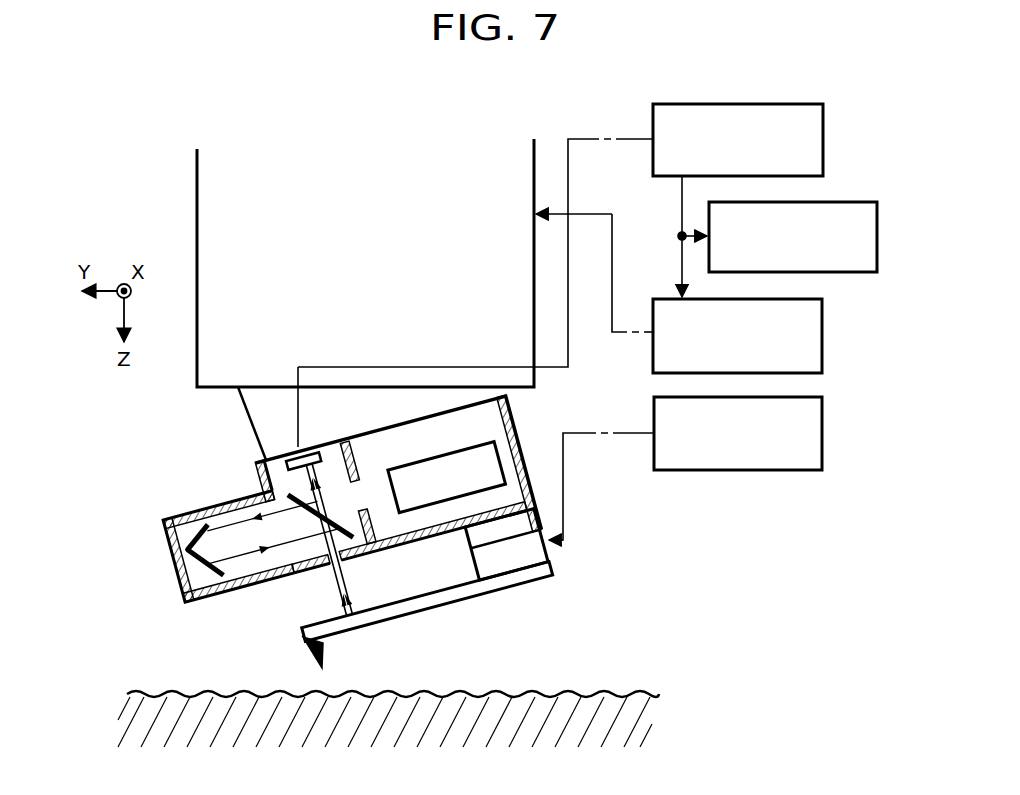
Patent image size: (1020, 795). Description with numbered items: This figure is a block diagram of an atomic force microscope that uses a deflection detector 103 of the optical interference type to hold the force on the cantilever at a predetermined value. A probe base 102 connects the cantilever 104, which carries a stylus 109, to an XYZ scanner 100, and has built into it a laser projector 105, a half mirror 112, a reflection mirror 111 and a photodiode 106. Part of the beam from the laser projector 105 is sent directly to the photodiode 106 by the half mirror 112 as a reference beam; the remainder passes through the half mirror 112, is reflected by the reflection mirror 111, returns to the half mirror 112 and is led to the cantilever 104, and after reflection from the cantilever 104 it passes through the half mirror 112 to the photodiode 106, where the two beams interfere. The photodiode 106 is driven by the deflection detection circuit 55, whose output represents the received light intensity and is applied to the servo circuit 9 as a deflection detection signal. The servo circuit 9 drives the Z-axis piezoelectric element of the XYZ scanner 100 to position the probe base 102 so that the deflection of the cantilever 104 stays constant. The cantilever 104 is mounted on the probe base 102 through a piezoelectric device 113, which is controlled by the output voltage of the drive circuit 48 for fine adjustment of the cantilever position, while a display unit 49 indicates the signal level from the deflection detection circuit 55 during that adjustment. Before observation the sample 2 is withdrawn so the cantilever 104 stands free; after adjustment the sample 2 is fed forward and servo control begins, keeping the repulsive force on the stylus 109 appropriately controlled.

The XYZ scanner 100 is at (197, 191).
The deflection detection circuit 55 is at (824, 122).
The display unit 49 is at (840, 202).
The servo circuit 9 is at (823, 318).
The drive circuit 48 is at (823, 420).
The probe base 102 is at (530, 470).
The deflection detector 103 is at (128, 560).
The reflection mirror 111 is at (180, 580).
The half mirror 112 is at (294, 490).
The photodiode 106 is at (288, 456).
The laser projector 105 is at (408, 463).
The piezoelectric device 113 is at (507, 567).
The cantilever 104 is at (422, 613).
The stylus 109 is at (321, 666).
The sample 2 is at (615, 692).